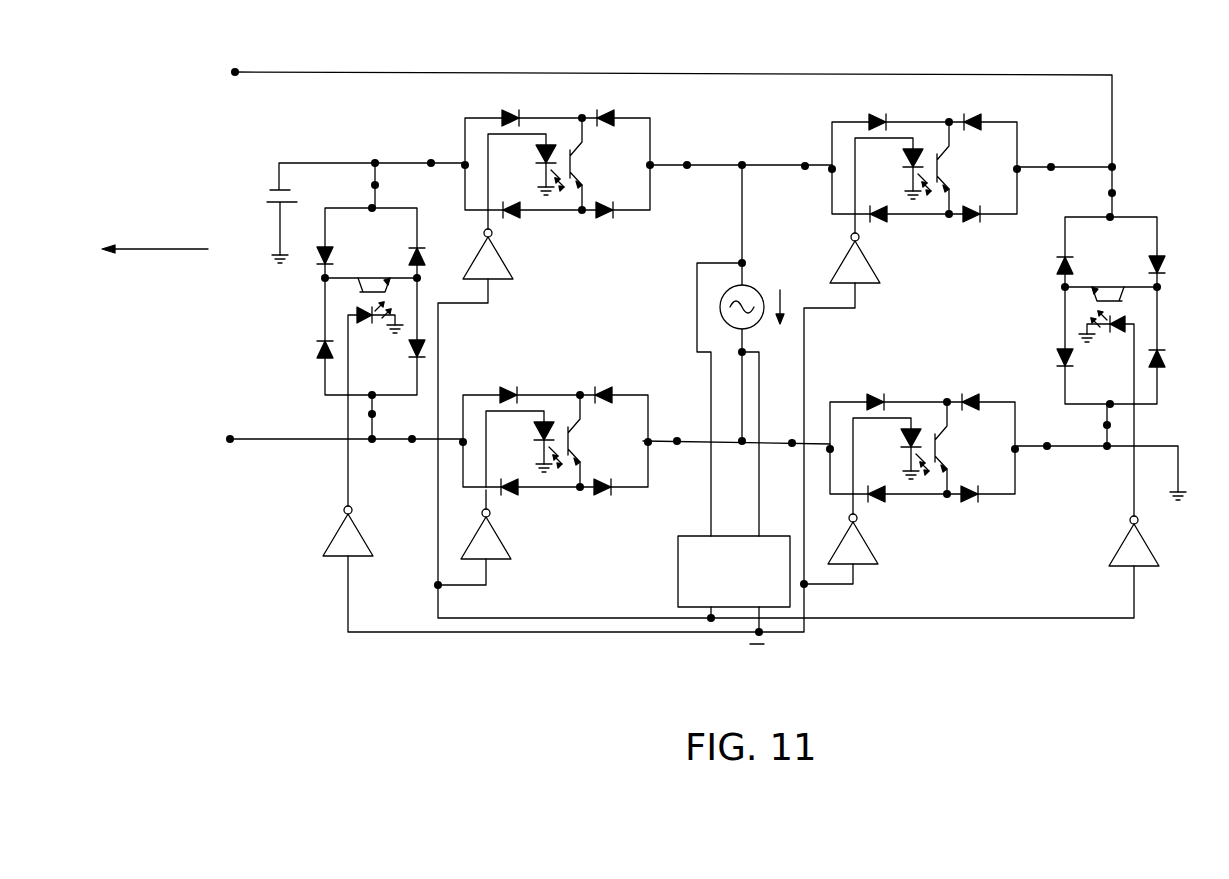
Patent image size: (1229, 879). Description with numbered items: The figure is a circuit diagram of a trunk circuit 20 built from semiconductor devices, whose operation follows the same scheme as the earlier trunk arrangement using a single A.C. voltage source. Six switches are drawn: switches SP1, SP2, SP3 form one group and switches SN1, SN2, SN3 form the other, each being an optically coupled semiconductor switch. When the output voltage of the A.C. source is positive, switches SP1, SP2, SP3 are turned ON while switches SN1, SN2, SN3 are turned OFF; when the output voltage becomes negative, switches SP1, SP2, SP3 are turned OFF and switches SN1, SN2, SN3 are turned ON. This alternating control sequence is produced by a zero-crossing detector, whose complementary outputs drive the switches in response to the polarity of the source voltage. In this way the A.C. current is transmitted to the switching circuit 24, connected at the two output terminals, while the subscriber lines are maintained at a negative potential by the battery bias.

The bidirectional switching circuit 20 is at (273, 532).
The switching circuit 24 is at (155, 275).
The switch SP1 is at (1127, 310).
The switch SP2 is at (557, 178).
The switch SP3 is at (555, 458).
The switch SN1 is at (924, 182).
The switch SN2 is at (922, 463).
The switch SN3 is at (344, 301).